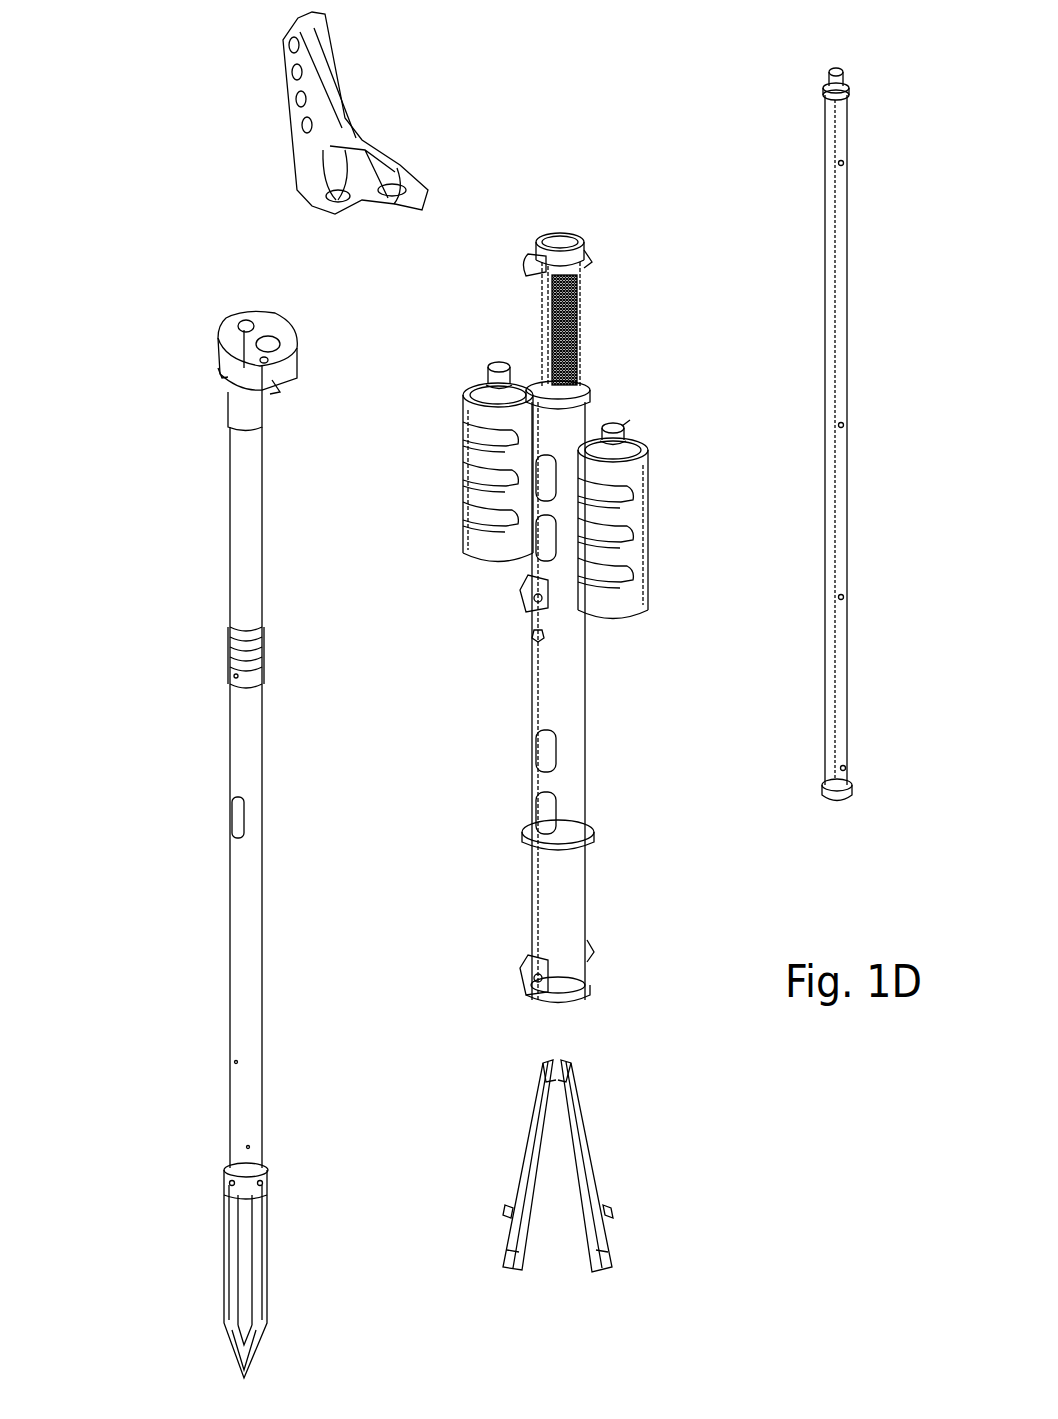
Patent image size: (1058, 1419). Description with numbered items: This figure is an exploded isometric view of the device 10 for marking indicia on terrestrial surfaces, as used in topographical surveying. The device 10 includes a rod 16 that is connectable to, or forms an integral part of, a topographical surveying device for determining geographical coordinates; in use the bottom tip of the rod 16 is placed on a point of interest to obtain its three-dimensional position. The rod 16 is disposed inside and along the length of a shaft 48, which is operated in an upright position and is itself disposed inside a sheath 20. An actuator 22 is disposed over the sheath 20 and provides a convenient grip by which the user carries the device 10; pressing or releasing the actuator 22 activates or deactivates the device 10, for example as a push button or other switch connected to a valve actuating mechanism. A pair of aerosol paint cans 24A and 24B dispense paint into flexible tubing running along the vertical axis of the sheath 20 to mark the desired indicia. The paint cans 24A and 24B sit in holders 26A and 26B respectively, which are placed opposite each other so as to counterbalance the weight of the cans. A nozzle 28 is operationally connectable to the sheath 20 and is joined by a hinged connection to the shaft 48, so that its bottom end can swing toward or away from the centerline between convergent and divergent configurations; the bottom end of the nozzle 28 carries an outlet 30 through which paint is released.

The device for marking indicia on terrestrial surfaces 10 is at (177, 147).
The rod 16 is at (848, 170).
The sheath 20 is at (585, 275).
The actuator 22 is at (375, 133).
The aerosol paint can 24A is at (648, 595).
The aerosol paint can 24B is at (495, 512).
The holder 26A is at (648, 545).
The holder 26B is at (498, 520).
The nozzle 28 is at (585, 1115).
The outlet 30 is at (612, 1252).
The shaft 48 is at (248, 468).